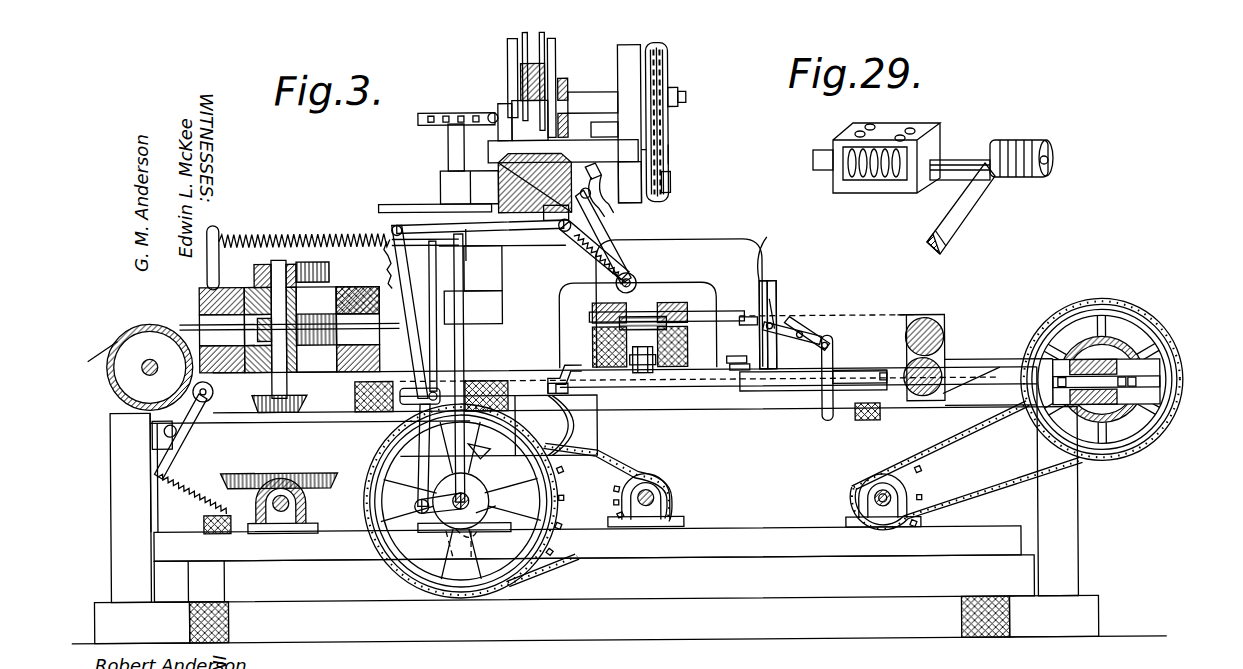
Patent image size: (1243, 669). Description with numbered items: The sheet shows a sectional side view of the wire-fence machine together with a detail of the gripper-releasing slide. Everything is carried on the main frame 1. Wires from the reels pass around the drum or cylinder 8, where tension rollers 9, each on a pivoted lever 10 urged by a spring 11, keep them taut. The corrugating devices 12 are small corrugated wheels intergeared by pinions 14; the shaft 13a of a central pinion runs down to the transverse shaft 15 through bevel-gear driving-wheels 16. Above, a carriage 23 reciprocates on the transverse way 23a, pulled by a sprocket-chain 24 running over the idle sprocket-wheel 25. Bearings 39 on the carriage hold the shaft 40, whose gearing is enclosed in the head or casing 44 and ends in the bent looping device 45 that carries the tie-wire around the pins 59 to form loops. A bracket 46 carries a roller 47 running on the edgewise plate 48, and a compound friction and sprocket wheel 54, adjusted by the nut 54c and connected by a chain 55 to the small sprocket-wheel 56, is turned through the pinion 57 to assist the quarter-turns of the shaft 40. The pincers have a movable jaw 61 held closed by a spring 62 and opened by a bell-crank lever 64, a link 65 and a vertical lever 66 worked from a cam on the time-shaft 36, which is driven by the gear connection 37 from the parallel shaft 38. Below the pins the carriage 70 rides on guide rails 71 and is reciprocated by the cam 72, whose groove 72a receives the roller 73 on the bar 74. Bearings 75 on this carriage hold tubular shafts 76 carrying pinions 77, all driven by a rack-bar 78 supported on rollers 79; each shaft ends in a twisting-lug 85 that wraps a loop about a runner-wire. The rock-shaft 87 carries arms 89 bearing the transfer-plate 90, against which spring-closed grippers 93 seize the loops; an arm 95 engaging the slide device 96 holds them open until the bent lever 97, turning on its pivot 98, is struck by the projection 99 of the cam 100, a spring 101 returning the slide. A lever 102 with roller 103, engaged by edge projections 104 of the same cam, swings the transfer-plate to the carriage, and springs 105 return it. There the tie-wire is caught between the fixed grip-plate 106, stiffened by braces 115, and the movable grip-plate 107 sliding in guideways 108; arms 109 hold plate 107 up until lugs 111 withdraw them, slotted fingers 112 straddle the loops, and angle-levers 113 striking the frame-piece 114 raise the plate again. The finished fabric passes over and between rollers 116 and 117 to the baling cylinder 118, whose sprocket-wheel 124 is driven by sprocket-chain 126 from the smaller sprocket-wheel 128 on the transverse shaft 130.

In FIG. 3, the main frame 1 is at (683, 612).
In FIG. 3, the drum or cylinder 8 is at (110, 370).
In FIG. 3, the tension wheels or rollers 9 is at (213, 392).
In FIG. 3, the pivoted lever 10 is at (180, 434).
In FIG. 3, the spring 11 is at (190, 492).
In FIG. 3, the corrugating devices 12 is at (298, 340).
In FIG. 3, the shaft 13a is at (288, 262).
In FIG. 3, the toothed wheels or pinions 14 is at (264, 260).
In FIG. 3, the transverse shaft 15 is at (279, 510).
In FIG. 3, the bevel-gear driving-wheels 16 is at (310, 500).
In FIG. 3, the carriage 23 is at (563, 151).
In FIG. 3, the transverse way or guide 23a is at (553, 215).
In FIG. 3, the sprocket-chain 24 is at (423, 111).
In FIG. 3, the sprocket-wheel 25 is at (448, 128).
In FIG. 3, the time-shaft 36 is at (450, 516).
In FIG. 3, the gear connection 37 is at (560, 500).
In FIG. 3, the parallel shaft 38 is at (672, 496).
In FIG. 3, the bearings 39 is at (500, 104).
In FIG. 3, the shaft 40 is at (590, 108).
In FIG. 3, the head or casing 44 is at (631, 182).
In FIG. 3, the looping device 45 is at (609, 205).
In FIG. 3, the bracket 46 is at (511, 42).
In FIG. 3, the roller 47 is at (540, 40).
In FIG. 3, the transverse plate 48 is at (523, 72).
In FIG. 3, the compound friction and sprocket wheel 54 is at (671, 148).
In FIG. 3, the nut 54c is at (688, 100).
In FIG. 3, the chain 55 is at (670, 70).
In FIG. 3, the small sprocket-wheel 56 is at (672, 192).
In FIG. 3, the pinion 57 is at (572, 80).
In FIG. 3, the pins 59 is at (608, 168).
In FIG. 3, the movable jaw 61 is at (412, 204).
In FIG. 3, the spring 62 is at (362, 284).
In FIG. 3, the bell-crank lever 64 is at (478, 195).
In FIG. 3, the link 65 is at (440, 262).
In FIG. 3, the vertical lever 66 is at (425, 294).
In FIG. 3, the carriage 70 is at (689, 346).
In FIG. 3, the guide rails or ways 71 is at (740, 366).
In FIG. 3, the cam 72 is at (556, 425).
In FIG. 3, the groove 72a is at (590, 422).
In FIG. 3, the shaft 73 is at (372, 450).
In FIG. 3, the bar 74 is at (266, 412).
In FIG. 3, the bearings 75 is at (688, 302).
In FIG. 3, the tubular shafts 76 is at (728, 312).
In FIG. 3, the pinion 77 is at (646, 300).
In FIG. 3, the rack-bar 78 is at (646, 362).
In FIG. 3, the rollers 79 is at (640, 374).
In FIG. 3, the twisting-lug 85 is at (748, 327).
In FIG. 3, the rock-shaft 87 is at (615, 288).
In FIG. 3, the arms 89 is at (606, 236).
In FIG. 3, the transfer-plate 90 is at (505, 170).
In FIG. 3, the grippers or grip-fingers 93 is at (605, 229).
In FIG. 3, the arm 95 is at (578, 255).
In FIG. 3, the slide device 96 is at (572, 272).
In FIG. 29, the slide device 96 is at (980, 142).
In FIG. 3, the bent lever 97 is at (460, 262).
In FIG. 29, the bent lever 97 is at (960, 222).
In FIG. 3, the pivot 98 is at (462, 392).
In FIG. 3, the projection 99 is at (483, 492).
In FIG. 3, the cam 100 is at (490, 512).
In FIG. 29, the spring 101 is at (881, 184).
In FIG. 3, the lever 102 is at (425, 338).
In FIG. 3, the roller 103 is at (447, 514).
In FIG. 3, the edge projections 104 is at (483, 546).
In FIG. 3, the springs 105 is at (240, 236).
In FIG. 3, the fixed grip-plate 106 is at (790, 300).
In FIG. 3, the movable grip-plate 107 is at (767, 282).
In FIG. 3, the vertical guideways 108 is at (778, 294).
In FIG. 3, the arms 109 is at (760, 280).
In FIG. 3, the fixed blocks or lugs 111 is at (736, 373).
In FIG. 3, the slotted fingers 112 is at (771, 300).
In FIG. 3, the angle-levers 113 is at (820, 418).
In FIG. 3, the frame-piece 114 is at (858, 424).
In FIG. 3, the braces 115 is at (788, 330).
In FIG. 3, the roller 116 is at (945, 332).
In FIG. 3, the roller 117 is at (945, 378).
In FIG. 3, the baling roll or cylinder 118 is at (1128, 345).
In FIG. 3, the sprocket-wheel 124 is at (1160, 390).
In FIG. 3, the sprocket-chain 126 is at (1133, 305).
In FIG. 3, the sprocket-wheel 128 is at (905, 480).
In FIG. 3, the transverse shaft 130 is at (882, 512).